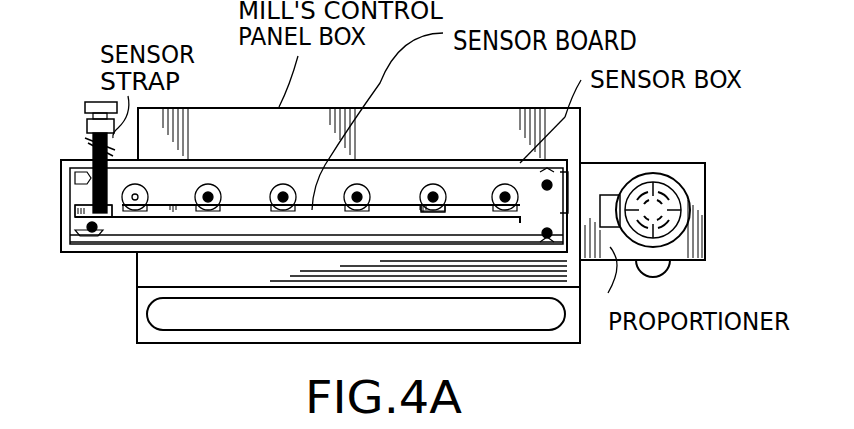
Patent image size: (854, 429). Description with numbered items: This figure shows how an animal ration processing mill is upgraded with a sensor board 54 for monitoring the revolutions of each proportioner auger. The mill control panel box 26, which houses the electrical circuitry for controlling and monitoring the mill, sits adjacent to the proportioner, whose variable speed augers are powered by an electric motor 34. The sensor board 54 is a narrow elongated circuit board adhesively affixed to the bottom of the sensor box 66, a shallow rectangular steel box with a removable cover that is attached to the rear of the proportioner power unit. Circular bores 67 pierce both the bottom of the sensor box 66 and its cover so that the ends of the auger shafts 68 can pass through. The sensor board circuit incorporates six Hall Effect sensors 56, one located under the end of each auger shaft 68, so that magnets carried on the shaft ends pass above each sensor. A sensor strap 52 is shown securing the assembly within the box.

The mill control panel box 26 is at (580, 122).
The electric motor 34 is at (645, 163).
The sensor strap bolt 52 is at (88, 141).
The sensor board 54 is at (115, 214).
The Hall Effect sensors 56 is at (425, 212).
The sensor box 66 is at (163, 257).
The circular bores 67 is at (433, 196).
The auger shaft 68 is at (505, 196).